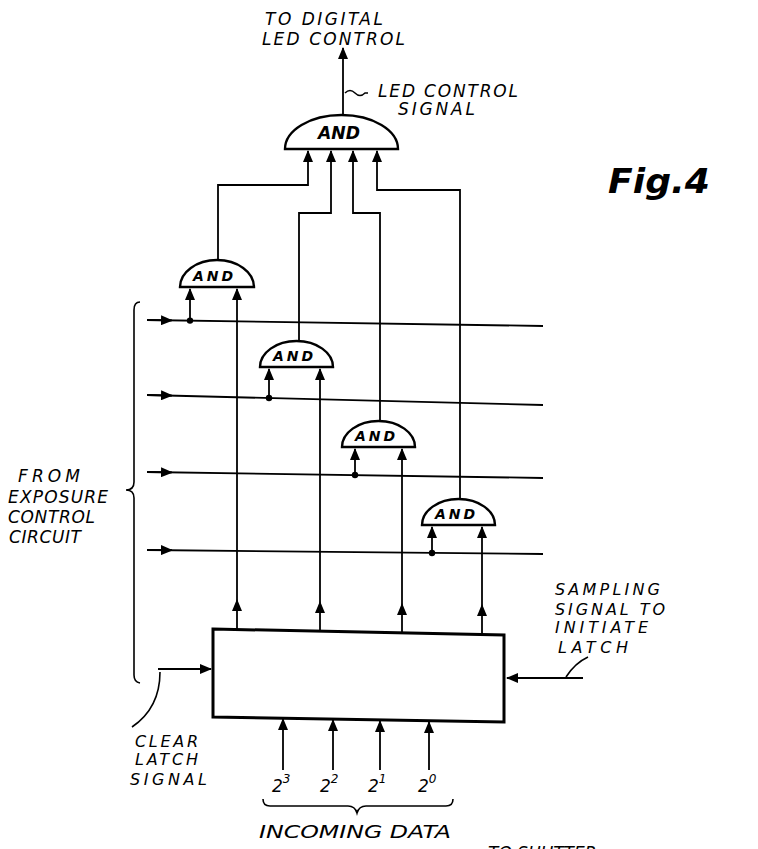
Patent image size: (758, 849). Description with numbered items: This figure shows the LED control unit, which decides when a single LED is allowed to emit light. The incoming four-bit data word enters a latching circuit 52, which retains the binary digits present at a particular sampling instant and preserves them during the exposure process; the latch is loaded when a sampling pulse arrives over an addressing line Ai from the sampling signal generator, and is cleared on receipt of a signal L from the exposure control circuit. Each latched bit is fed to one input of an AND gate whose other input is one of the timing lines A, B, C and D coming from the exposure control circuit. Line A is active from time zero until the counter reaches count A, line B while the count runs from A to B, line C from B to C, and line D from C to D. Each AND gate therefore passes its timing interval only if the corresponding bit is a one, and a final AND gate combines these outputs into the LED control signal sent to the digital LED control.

The latching circuit 52 is at (358, 675).
The line A is at (345, 307).
The line B is at (345, 387).
The line C is at (345, 463).
The line D is at (344, 541).
The signal L is at (175, 658).
The addressing pulse line Ai is at (545, 665).